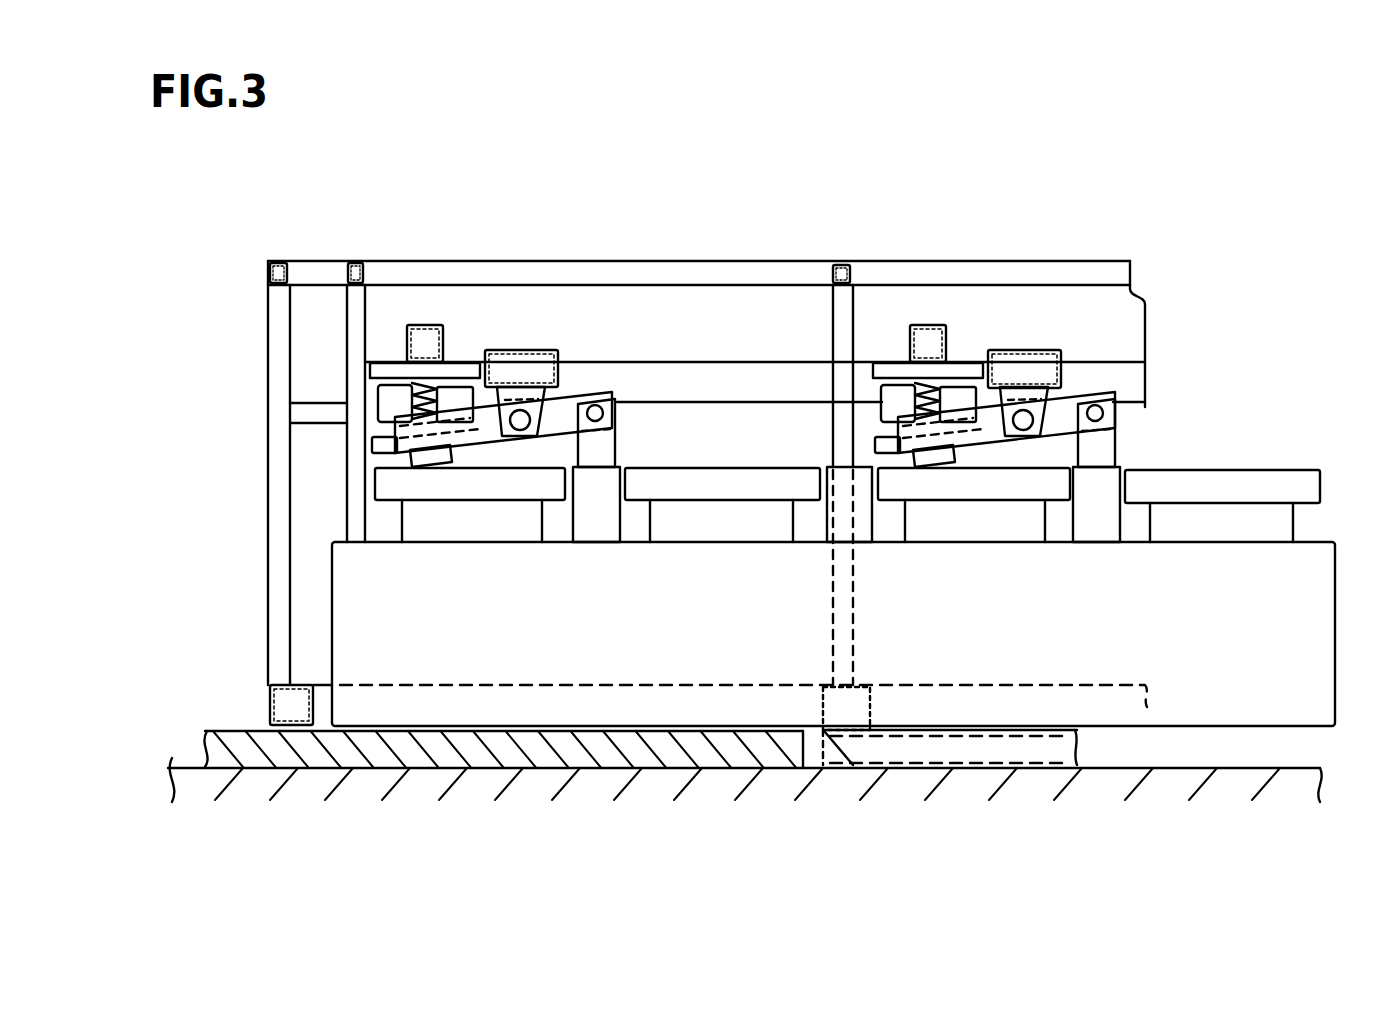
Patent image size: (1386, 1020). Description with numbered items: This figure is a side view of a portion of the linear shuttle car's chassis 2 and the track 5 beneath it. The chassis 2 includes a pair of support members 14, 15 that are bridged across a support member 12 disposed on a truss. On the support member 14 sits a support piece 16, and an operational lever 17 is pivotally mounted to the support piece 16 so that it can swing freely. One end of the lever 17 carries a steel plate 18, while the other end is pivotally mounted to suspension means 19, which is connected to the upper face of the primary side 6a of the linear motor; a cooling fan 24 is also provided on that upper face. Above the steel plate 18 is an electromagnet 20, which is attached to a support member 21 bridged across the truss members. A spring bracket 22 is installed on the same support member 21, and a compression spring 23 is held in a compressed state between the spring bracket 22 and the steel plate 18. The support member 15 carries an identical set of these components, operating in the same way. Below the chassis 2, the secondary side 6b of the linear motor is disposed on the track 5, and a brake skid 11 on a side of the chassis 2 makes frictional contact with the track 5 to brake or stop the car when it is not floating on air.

The chassis 2 is at (892, 160).
The track 5 is at (1180, 768).
The primary side of linear motor 6a is at (347, 582).
The secondary side of linear motor 6b is at (497, 757).
The brake skid 11 is at (963, 750).
The support member 12 is at (650, 370).
The support member 14 is at (523, 350).
The support member 15 is at (1035, 350).
The support piece 16 is at (513, 392).
The operational lever 17 is at (567, 408).
The steel plate 18 is at (373, 448).
The suspension means 19 is at (595, 482).
The electromagnet 20 is at (400, 388).
The support member 21 is at (425, 325).
The spring bracket 22 is at (460, 367).
The compression spring 23 is at (380, 402).
The cooling fan 24 is at (725, 487).